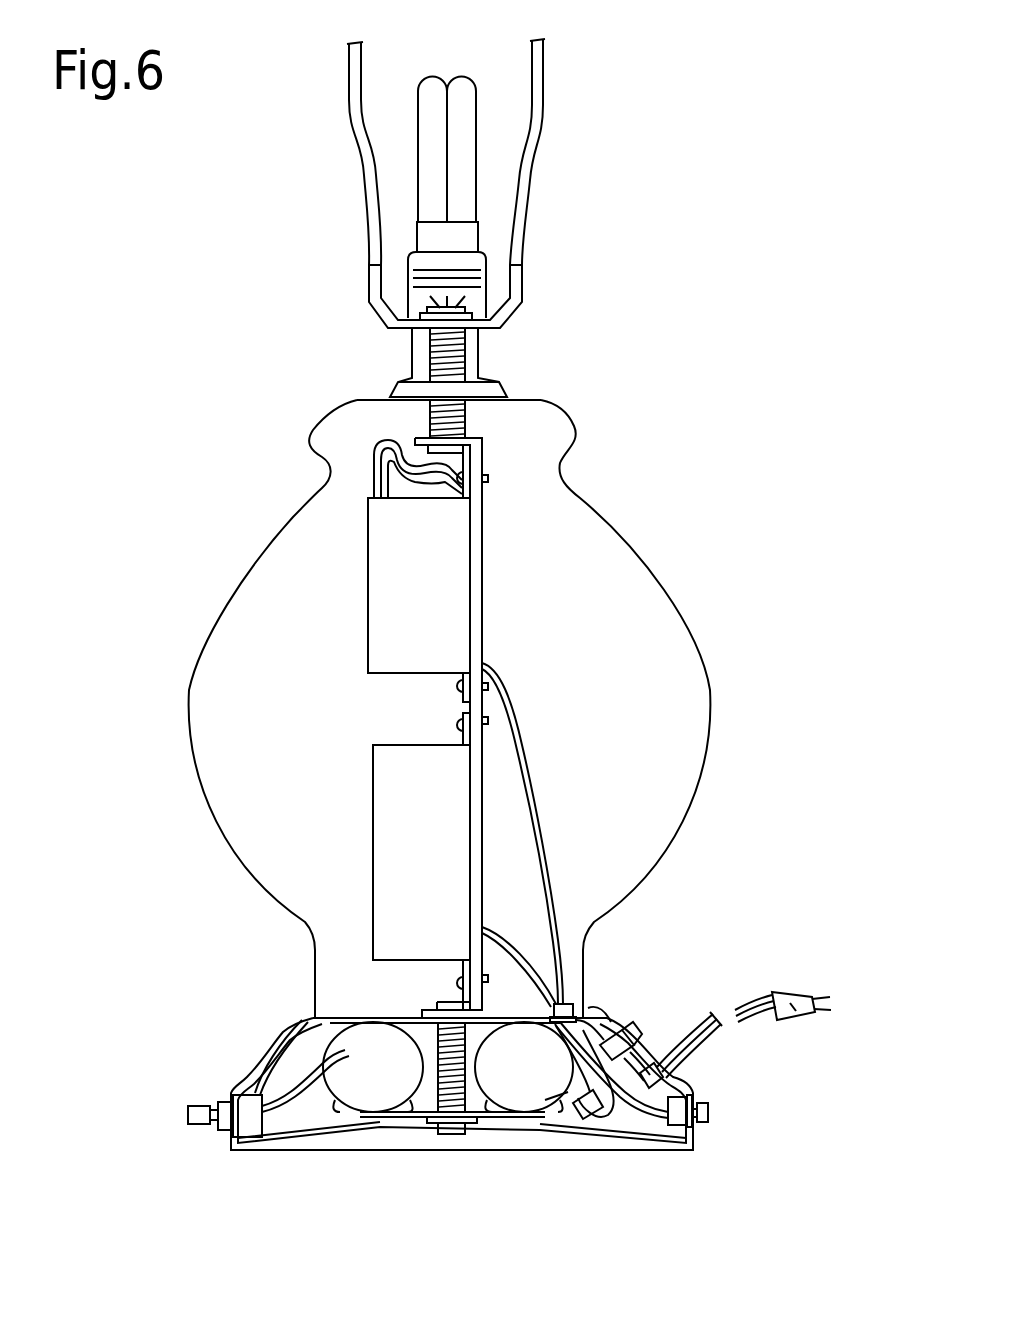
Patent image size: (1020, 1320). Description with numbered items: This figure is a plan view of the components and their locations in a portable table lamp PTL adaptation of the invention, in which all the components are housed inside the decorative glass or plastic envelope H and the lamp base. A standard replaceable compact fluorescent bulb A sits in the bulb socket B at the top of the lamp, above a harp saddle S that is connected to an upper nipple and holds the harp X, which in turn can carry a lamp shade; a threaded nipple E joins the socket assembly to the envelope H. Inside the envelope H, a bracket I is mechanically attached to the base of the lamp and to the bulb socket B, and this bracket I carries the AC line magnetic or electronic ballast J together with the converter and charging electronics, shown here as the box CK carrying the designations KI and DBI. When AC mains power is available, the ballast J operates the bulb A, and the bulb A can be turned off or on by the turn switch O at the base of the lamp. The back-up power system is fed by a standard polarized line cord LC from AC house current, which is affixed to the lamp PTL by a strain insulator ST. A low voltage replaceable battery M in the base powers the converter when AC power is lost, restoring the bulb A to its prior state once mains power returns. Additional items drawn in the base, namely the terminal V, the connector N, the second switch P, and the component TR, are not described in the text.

The harp X is at (356, 146).
The compact fluorescent bulb A is at (482, 168).
The bulb socket B is at (491, 266).
The harp saddle S is at (533, 286).
The nipple E is at (428, 355).
The decorative envelope H is at (298, 511).
The bracket I is at (489, 526).
The AC ballast J is at (365, 588).
The portable table lamp PTL is at (750, 672).
The circuit board / control box CK is at (363, 852).
The circuit designation KI is at (405, 800).
The circuit designation DBI is at (415, 830).
The low voltage replaceable battery M is at (353, 1070).
The turn switch O is at (213, 1094).
The terminal block V is at (572, 996).
The connector N is at (645, 1012).
The strain insulator ST is at (661, 1066).
The polarized line cord LC is at (726, 1024).
The right switch P is at (709, 1108).
The transformer TR is at (593, 1119).